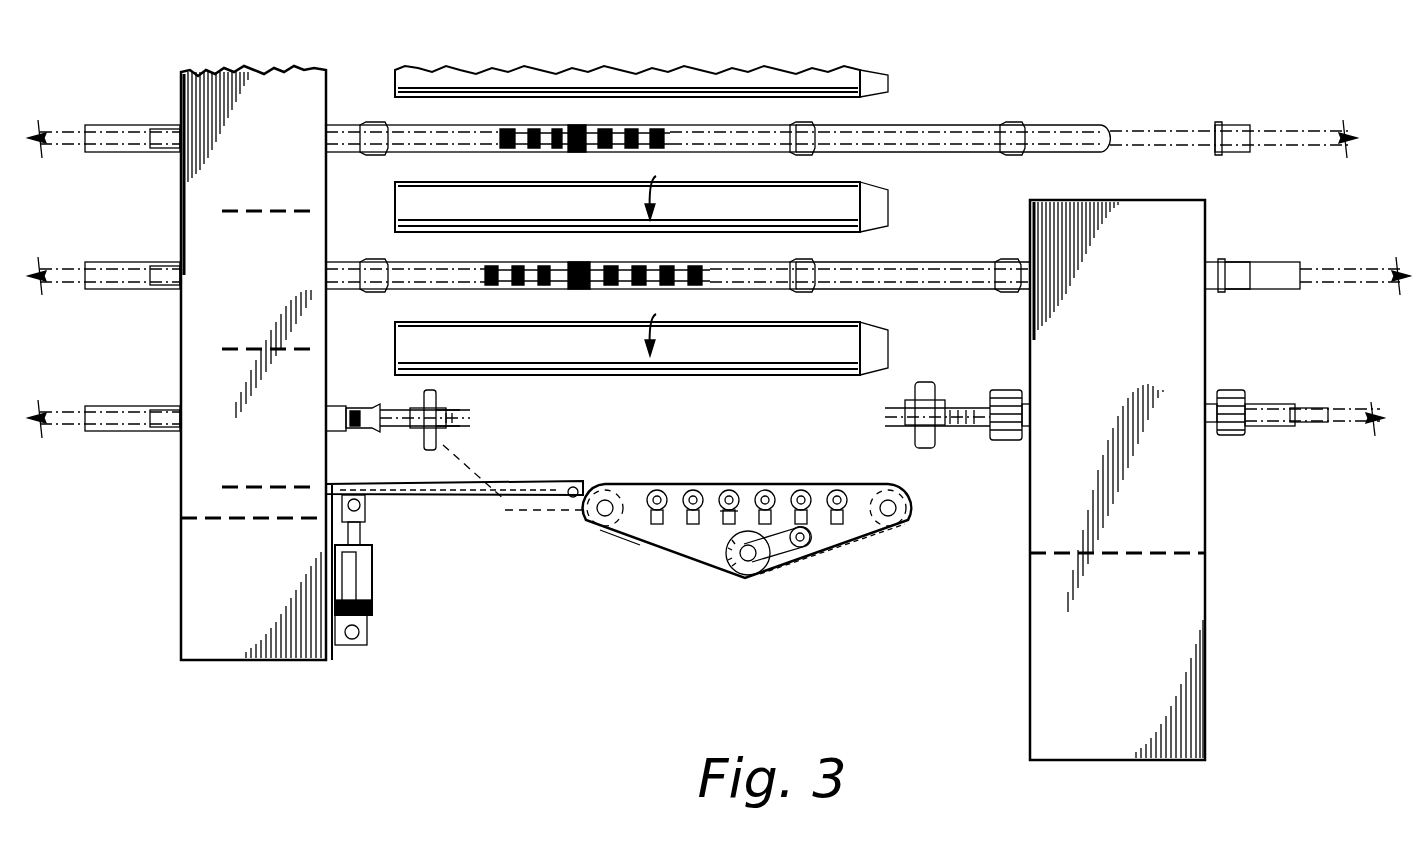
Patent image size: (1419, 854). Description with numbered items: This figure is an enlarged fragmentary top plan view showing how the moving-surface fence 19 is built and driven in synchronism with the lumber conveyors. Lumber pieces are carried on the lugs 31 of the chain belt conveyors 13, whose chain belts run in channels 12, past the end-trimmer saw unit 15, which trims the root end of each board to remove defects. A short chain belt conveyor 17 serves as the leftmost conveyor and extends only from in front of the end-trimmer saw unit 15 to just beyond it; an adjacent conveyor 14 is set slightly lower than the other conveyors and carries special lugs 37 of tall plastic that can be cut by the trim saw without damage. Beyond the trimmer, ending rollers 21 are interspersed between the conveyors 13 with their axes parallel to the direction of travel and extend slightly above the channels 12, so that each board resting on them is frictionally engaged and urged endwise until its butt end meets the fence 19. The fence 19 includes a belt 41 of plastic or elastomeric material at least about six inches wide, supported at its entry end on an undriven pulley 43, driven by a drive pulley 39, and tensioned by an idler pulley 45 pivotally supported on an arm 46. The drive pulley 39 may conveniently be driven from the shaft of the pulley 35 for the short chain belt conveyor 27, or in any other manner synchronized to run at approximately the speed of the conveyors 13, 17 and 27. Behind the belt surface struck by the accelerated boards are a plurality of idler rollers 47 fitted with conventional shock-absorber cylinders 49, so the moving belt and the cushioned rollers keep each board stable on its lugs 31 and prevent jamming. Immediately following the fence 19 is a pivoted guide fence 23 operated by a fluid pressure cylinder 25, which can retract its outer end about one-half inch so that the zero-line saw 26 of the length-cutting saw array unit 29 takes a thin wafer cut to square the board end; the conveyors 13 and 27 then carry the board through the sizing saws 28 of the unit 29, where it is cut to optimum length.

The channels 12 is at (1008, 150).
The chain belt conveyors 13 is at (888, 136).
The conveyor 14 is at (1282, 428).
The end-trimmer saw unit 15 is at (1125, 356).
The short chain belt conveyor 17 is at (1278, 404).
The fence 19 is at (746, 518).
The ending rollers 21 is at (890, 84).
The pivoted guide fence 23 is at (498, 484).
The fluid pressure cylinder 25 is at (374, 584).
The zero-line saw 26 is at (262, 488).
The short chain belt conveyor 27 is at (386, 404).
The sizing saws 28 is at (258, 208).
The length-cutting saw array unit 29 is at (240, 459).
The lugs 31 is at (376, 124).
The pulley 35 is at (440, 404).
The special lugs 37 is at (1005, 390).
The drive pulley 39 is at (584, 514).
The belt 41 is at (636, 544).
The undriven pulley 43 is at (914, 512).
The idler pulley 45 is at (724, 570).
The arm 46 is at (780, 556).
The idler rollers 47 is at (812, 490).
The shock-absorber cylinders 49 is at (722, 514).